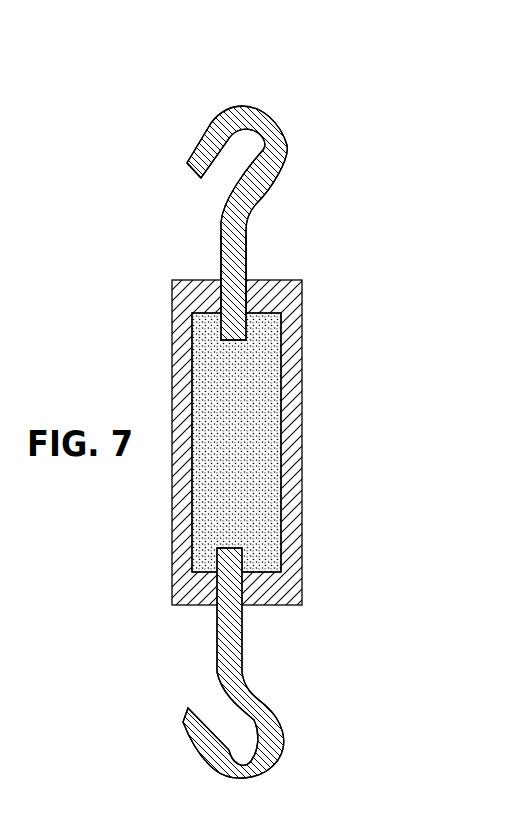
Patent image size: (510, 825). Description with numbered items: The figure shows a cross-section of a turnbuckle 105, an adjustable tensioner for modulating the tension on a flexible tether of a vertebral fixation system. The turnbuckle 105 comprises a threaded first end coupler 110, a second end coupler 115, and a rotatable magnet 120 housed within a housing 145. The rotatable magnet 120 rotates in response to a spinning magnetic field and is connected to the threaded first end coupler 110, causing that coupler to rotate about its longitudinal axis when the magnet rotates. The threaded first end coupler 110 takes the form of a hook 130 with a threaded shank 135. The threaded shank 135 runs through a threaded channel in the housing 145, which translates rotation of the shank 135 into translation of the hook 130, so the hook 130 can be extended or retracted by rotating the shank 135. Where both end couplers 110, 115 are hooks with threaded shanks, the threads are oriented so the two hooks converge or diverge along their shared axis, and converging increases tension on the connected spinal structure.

The turnbuckle 105 is at (284, 390).
The threaded first end coupler 110 is at (251, 223).
The second end coupler 115 is at (281, 663).
The rotatable magnet 120 is at (312, 442).
The hook 130 is at (158, 198).
The threaded shank 135 is at (285, 252).
The housing 145 is at (333, 288).